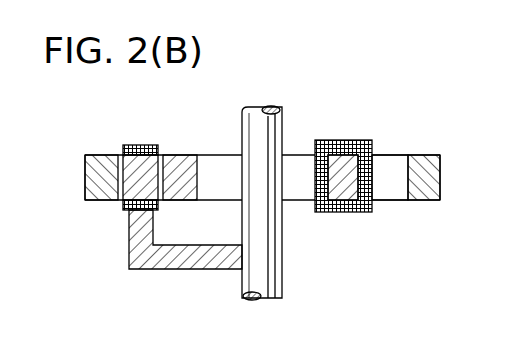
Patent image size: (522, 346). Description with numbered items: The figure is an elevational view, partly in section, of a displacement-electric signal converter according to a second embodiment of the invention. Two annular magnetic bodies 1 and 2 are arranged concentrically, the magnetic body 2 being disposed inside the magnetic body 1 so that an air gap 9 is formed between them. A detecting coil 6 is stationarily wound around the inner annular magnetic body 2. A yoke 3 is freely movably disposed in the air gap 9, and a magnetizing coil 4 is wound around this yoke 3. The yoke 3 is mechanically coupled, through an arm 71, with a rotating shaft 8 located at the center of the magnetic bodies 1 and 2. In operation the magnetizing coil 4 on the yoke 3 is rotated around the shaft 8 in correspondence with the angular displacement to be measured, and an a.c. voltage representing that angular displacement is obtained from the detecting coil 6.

The annular magnetic body 1 is at (440, 176).
The annular magnetic body 2 is at (335, 212).
The yoke 3 is at (138, 146).
The magnetizing coil 4 is at (125, 208).
The detecting coil 6 is at (333, 140).
The rotating shaft 8 is at (283, 262).
The air gap 9 is at (387, 187).
The arm 71 is at (160, 270).